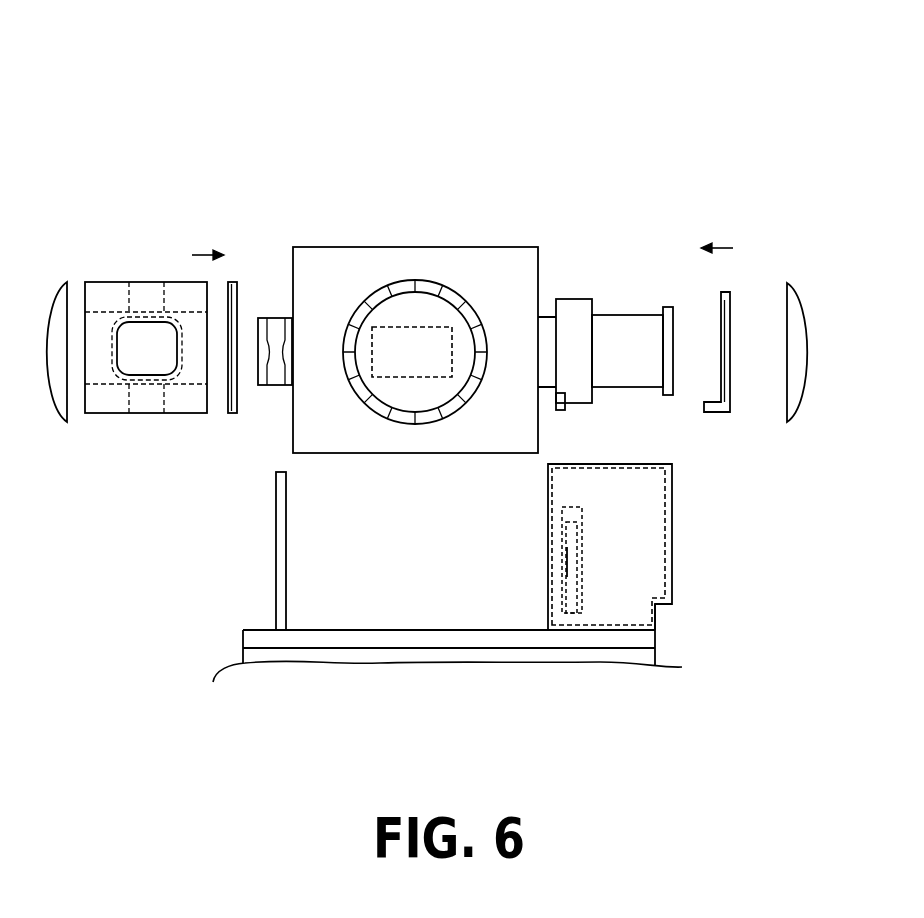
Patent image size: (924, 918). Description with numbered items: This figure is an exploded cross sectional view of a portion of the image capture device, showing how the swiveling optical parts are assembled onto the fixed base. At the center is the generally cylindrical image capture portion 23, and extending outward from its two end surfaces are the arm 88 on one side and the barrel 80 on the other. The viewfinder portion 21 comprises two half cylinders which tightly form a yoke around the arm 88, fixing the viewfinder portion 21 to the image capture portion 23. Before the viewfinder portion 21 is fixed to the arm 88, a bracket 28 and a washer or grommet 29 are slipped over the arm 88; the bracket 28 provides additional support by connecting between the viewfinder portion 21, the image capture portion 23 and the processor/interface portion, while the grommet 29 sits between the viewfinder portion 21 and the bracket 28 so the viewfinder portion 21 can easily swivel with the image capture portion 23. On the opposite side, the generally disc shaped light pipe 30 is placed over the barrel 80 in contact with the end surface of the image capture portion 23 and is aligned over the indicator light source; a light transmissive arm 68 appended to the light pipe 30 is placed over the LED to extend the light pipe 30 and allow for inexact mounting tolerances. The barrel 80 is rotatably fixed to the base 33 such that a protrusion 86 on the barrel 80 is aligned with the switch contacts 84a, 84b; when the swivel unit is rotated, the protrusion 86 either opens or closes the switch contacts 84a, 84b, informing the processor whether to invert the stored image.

The viewfinder portion 21 is at (108, 282).
The image capture portion 23 is at (366, 247).
The bracket 28 is at (277, 557).
The grommet 29 is at (233, 412).
The light pipe 30 is at (730, 305).
The base 33 is at (667, 547).
The light transmissive arm 68 is at (710, 412).
The barrel 80 is at (633, 315).
The switch contact 84a is at (567, 552).
The switch contact 84b is at (562, 513).
The protrusion 86 is at (567, 403).
The arm 88 is at (270, 318).